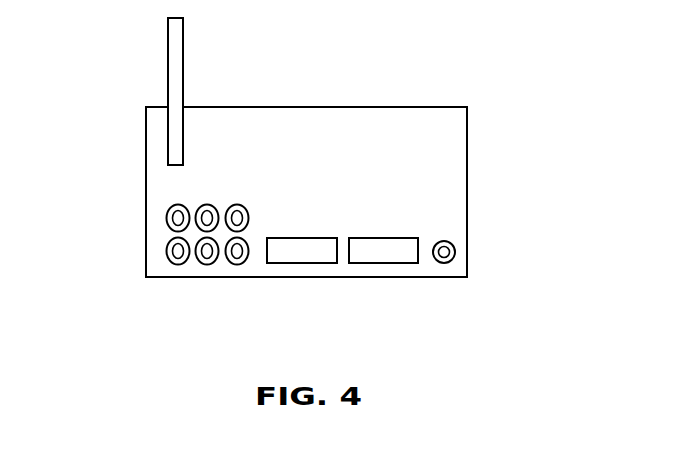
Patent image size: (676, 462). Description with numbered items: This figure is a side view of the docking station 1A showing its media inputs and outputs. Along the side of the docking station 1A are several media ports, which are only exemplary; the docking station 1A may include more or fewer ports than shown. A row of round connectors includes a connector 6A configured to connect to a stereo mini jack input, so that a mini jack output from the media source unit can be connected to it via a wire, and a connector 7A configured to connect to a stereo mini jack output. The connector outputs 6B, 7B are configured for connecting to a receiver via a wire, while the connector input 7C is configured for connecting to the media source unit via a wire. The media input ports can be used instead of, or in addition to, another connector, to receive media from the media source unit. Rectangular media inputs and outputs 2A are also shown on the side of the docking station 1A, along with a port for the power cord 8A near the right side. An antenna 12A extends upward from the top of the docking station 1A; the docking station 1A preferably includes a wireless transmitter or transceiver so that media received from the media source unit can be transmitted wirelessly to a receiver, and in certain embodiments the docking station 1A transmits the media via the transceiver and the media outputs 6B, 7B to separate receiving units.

The docking station 1A is at (467, 129).
The antenna 12A is at (167, 52).
The connector input 7C is at (167, 212).
The connector output 7B is at (205, 205).
The connector 7A is at (245, 205).
The connector output 6B is at (207, 265).
The connector 6A is at (238, 265).
The media inputs and outputs 2A is at (313, 263).
The power cord 8A is at (456, 250).